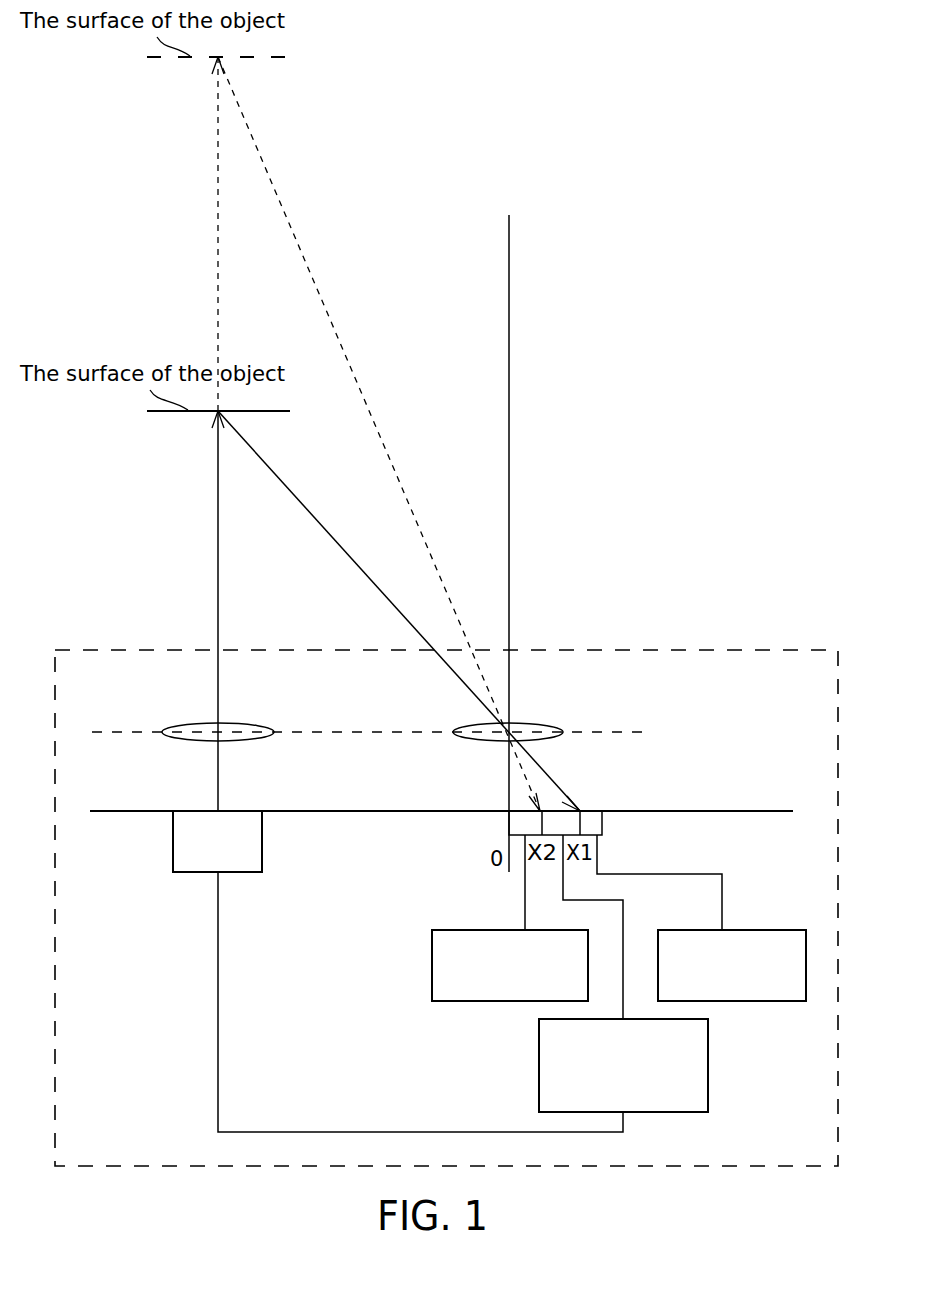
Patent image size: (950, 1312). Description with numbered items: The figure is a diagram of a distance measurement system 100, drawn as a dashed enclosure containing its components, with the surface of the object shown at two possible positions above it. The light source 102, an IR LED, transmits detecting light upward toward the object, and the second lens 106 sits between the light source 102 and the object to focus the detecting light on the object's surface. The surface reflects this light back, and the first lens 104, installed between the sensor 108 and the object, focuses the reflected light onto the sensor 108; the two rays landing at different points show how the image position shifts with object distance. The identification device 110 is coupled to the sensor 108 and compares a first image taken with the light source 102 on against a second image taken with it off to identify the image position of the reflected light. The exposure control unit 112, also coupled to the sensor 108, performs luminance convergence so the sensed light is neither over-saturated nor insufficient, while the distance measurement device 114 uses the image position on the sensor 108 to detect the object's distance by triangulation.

The distance measurement system 100 is at (700, 633).
The light source 102 is at (263, 840).
The first lens 104 is at (533, 723).
The second lens 106 is at (243, 723).
The sensor 108 is at (603, 825).
The identification device 110 is at (478, 929).
The exposure control unit 112 is at (748, 929).
The distance measurement device 114 is at (539, 1058).